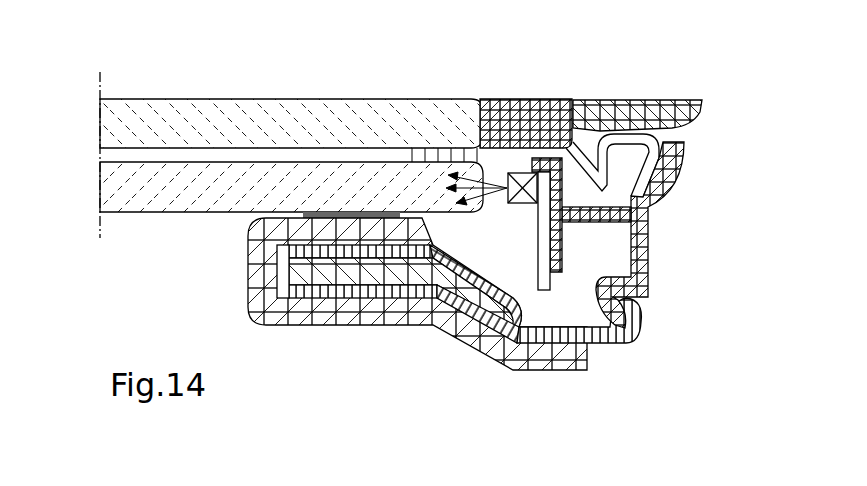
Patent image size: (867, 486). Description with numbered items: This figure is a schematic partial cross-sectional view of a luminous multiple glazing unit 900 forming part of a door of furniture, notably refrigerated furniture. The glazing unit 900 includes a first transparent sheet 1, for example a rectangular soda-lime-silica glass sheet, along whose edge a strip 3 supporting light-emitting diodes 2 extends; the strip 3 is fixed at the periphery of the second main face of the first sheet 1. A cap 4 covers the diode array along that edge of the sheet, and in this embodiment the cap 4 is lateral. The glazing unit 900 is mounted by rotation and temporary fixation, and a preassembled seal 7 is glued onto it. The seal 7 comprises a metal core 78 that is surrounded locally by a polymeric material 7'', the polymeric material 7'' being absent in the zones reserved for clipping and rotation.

The glazing unit 900 is at (126, 51).
The first transparent sheet 1 is at (298, 110).
The light-emitting diodes 2 is at (523, 203).
The strip 3 is at (545, 275).
The cap 4 is at (649, 256).
The preassembled seal 7 is at (592, 380).
The polymeric material 7'' is at (433, 316).
The metal core 78 is at (643, 333).